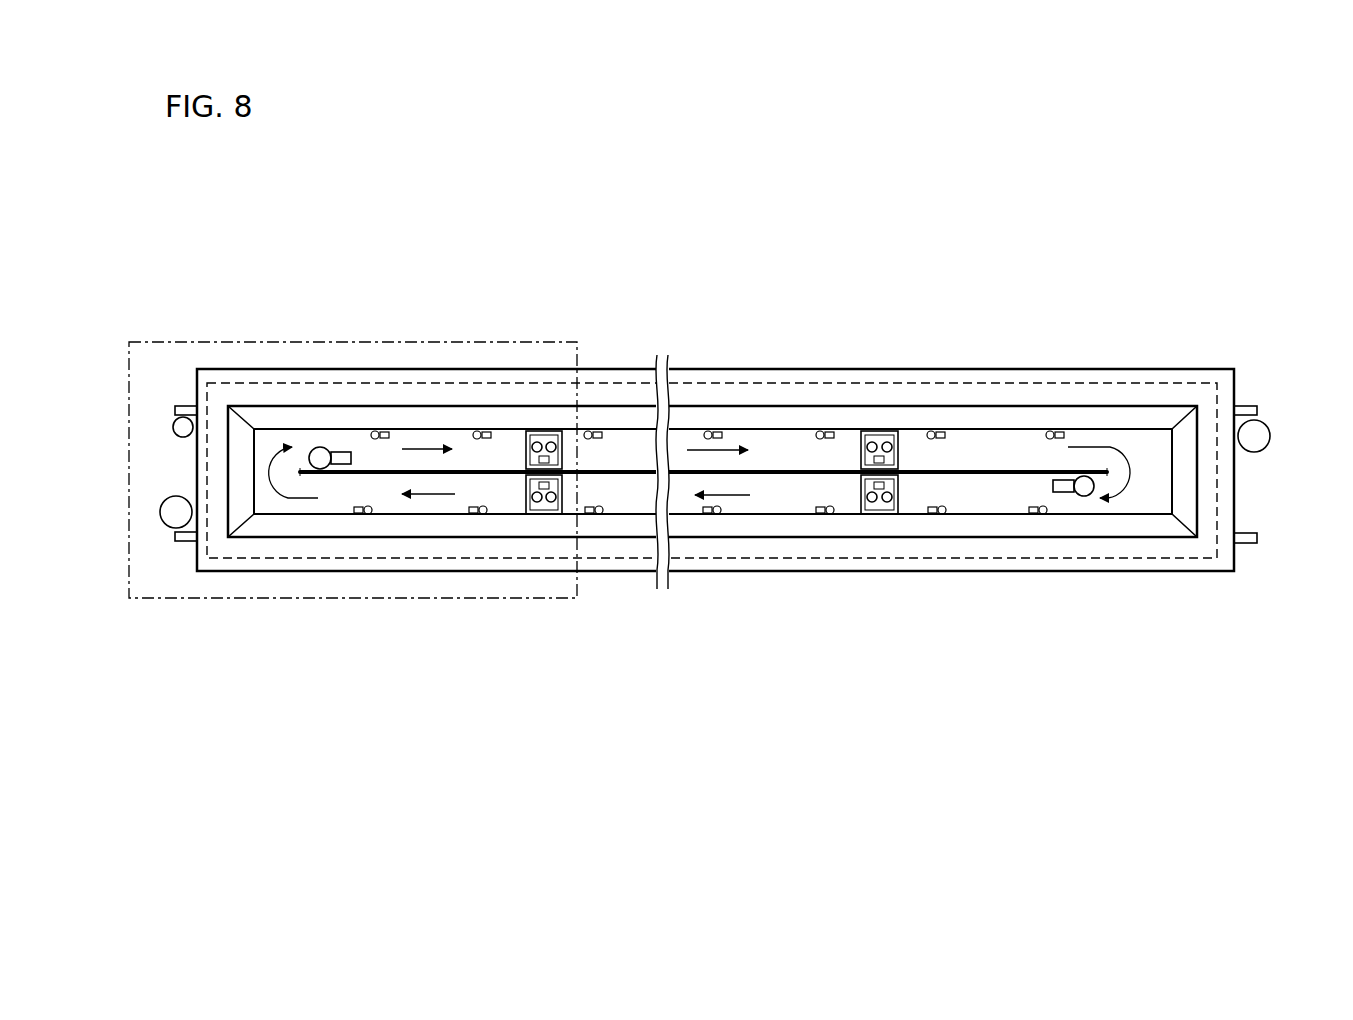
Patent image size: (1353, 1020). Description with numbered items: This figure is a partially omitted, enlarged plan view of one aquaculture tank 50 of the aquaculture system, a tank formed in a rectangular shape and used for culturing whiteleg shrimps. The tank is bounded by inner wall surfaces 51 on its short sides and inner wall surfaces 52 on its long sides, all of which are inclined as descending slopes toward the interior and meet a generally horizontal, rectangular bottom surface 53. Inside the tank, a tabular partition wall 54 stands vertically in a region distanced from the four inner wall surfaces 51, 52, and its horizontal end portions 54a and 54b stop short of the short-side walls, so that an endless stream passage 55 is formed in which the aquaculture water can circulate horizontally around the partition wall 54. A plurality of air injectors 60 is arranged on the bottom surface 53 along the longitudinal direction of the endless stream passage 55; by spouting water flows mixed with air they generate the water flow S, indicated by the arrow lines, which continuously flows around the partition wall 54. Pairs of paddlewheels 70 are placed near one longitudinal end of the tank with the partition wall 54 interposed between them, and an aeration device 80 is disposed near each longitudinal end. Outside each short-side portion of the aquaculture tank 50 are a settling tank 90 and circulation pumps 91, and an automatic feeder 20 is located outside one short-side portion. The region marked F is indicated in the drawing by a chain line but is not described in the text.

The automatic feeder 20 is at (180, 428).
The aquaculture tank 50 is at (1099, 548).
The inner wall surface 51 is at (243, 430).
The inner wall surface 52 is at (452, 418).
The bottom surface 53 is at (983, 453).
The partition wall 54 is at (778, 480).
The end portion of partition wall 54a is at (300, 466).
The end portion of partition wall 54b is at (1118, 450).
The endless stream passage 55 is at (792, 453).
The air injector 60 is at (376, 431).
The paddlewheel 70 is at (544, 429).
The aeration device 80 is at (320, 462).
The settling tank 90 is at (162, 514).
The circulation pump 91 is at (184, 405).
The water flow S is at (410, 448).
The frame region F is at (505, 338).